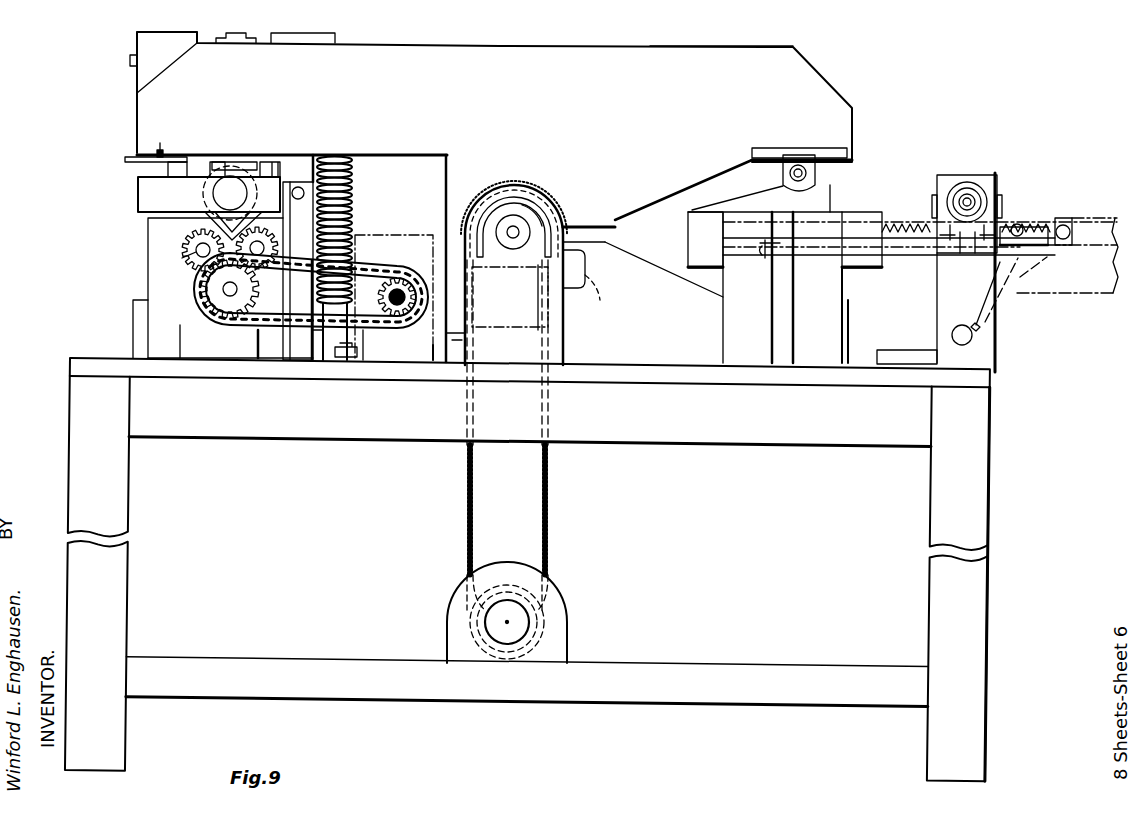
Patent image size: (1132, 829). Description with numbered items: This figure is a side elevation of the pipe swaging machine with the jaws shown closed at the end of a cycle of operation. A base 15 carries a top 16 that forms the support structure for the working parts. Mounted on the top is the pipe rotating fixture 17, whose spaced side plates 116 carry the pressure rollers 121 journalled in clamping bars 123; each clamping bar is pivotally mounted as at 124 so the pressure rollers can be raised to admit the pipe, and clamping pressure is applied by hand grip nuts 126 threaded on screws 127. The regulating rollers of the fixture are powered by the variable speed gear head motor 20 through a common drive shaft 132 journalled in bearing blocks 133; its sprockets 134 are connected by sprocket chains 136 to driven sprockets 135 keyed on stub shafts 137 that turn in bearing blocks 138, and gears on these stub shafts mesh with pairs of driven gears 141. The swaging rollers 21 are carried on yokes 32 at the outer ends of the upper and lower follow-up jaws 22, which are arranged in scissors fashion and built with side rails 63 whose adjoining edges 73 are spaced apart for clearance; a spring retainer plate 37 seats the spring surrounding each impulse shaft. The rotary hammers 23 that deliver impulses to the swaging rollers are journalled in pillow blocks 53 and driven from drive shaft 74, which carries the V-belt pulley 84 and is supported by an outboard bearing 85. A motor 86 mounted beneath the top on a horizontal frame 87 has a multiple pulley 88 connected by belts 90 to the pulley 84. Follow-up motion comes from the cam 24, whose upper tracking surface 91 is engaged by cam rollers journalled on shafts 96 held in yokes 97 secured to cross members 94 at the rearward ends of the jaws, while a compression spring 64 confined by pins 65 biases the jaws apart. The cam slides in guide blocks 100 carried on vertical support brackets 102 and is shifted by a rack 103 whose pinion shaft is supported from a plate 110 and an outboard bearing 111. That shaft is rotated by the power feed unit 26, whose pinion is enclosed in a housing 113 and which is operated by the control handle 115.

The base 15 is at (68, 446).
The top 16 is at (74, 358).
The pipe rotating fixture 17 is at (146, 248).
The variable speed gear head motor 20 is at (592, 282).
The swaging rollers 21 is at (190, 243).
The follow-up jaws 22 is at (471, 45).
The rotary hammers 23 is at (238, 34).
The follow-up cam 24 is at (836, 184).
The power unit 26 is at (1093, 294).
The yoke 32 is at (268, 162).
The spring retainer plate 37 is at (240, 157).
The pillow blocks 53 is at (147, 38).
The side rails 63 is at (688, 63).
The compression spring 64 is at (354, 208).
The pins 65 is at (354, 168).
The adjoining edges 73 is at (612, 238).
The drive shaft 74 is at (520, 222).
The V-belt pulley 84 is at (538, 206).
The outboard bearing 85 is at (532, 232).
The motor 86 is at (558, 625).
The horizontal frame 87 is at (740, 672).
The multiple V-belt pulley 88 is at (510, 590).
The belts 90 is at (554, 481).
The upper tracking surface 91 is at (758, 197).
The cross members 94 is at (768, 155).
The shafts 96 is at (790, 173).
The yokes 97 is at (806, 162).
The guide blocks 100 is at (860, 213).
The vertical support brackets 102 is at (730, 314).
The rack 103 is at (1020, 240).
The plate 110 is at (920, 350).
The outboard bearing 111 is at (936, 298).
The housing 113 is at (960, 175).
The control handle 115 is at (985, 348).
The side plates 116 is at (148, 287).
The pressure rollers 121 is at (290, 236).
The clamping bars 123 is at (138, 198).
The pivot 124 is at (300, 187).
The hand grip nuts 126 is at (150, 168).
The screws 127 is at (160, 157).
The common drive shaft 132 is at (416, 266).
The bearing blocks 133 is at (420, 362).
The sprockets 134 is at (395, 316).
The driven sprockets 135 is at (212, 298).
The sprocket chains 136 is at (298, 328).
The stub shafts 137 is at (226, 314).
The bearing blocks 138 is at (205, 346).
The driven gears 141 is at (183, 262).